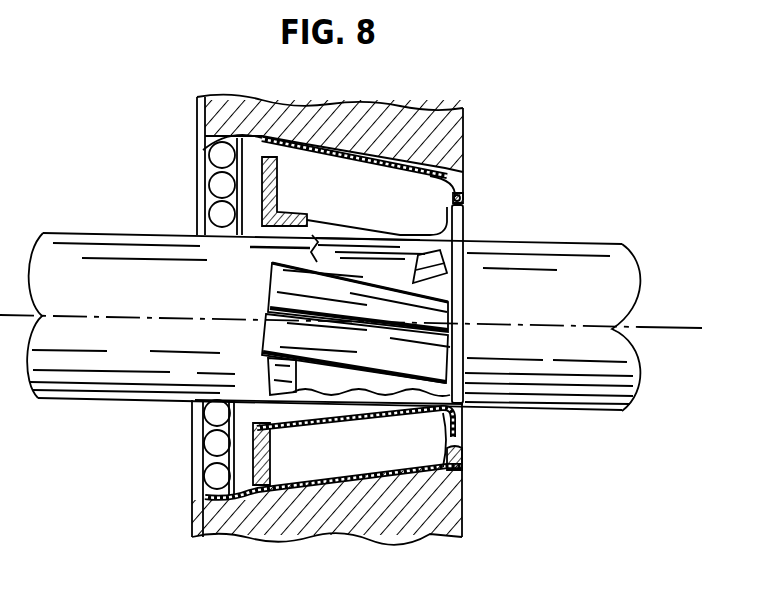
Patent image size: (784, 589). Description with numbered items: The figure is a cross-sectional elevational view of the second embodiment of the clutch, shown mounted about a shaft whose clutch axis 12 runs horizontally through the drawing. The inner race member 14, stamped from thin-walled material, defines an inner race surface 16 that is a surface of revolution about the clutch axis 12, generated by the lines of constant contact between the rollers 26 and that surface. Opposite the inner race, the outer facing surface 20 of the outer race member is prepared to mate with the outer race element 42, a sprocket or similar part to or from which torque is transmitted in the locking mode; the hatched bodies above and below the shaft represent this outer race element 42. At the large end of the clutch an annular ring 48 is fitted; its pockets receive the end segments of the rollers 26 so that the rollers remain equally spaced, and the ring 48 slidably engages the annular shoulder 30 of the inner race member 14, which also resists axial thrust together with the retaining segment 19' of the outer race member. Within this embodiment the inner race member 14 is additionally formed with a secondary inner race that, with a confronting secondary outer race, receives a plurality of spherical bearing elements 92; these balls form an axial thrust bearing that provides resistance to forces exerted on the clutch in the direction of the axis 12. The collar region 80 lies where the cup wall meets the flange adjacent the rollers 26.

The clutch axis 12 is at (687, 328).
The inner race member 14 is at (213, 419).
The inner race surface 16 is at (320, 410).
The seal 19' is at (510, 309).
The outer race surface 20 is at (463, 110).
The rollers 26 is at (448, 290).
The annular shoulder 30 is at (252, 537).
The outer race element 42 is at (381, 127).
The annular ring 48 is at (276, 177).
The collar 80 is at (447, 228).
The spherical bearing elements 92 is at (211, 186).